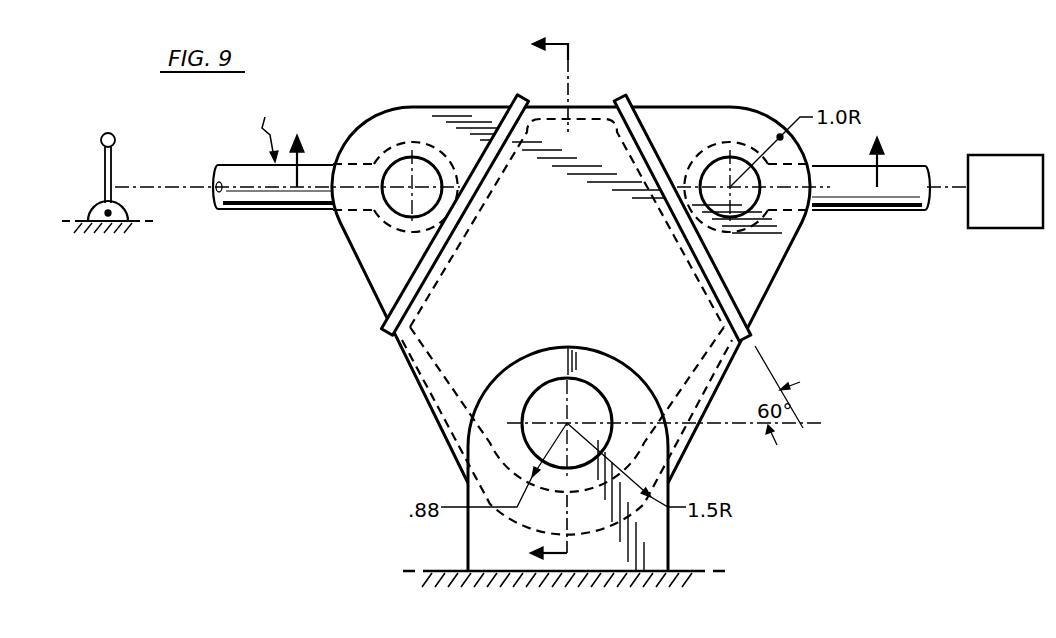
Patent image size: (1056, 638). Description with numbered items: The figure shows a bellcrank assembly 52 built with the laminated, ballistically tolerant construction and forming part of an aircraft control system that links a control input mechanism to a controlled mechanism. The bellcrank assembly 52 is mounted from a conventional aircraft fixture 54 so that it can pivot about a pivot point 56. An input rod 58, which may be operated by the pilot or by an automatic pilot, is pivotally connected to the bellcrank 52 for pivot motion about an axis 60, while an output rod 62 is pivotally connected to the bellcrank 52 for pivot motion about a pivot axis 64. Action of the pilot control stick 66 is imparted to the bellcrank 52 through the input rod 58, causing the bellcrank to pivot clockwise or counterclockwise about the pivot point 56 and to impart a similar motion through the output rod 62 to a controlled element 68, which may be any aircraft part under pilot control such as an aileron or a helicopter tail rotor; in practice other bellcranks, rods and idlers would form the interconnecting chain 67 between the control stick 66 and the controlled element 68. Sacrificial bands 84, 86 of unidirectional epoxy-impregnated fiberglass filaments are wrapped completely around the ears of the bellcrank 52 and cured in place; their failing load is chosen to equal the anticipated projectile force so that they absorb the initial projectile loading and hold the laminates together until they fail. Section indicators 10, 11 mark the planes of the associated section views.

The bellcrank assembly 52 is at (403, 96).
The aircraft fixture 54 is at (660, 532).
The pivot point 56 is at (563, 421).
The input rod 58 is at (239, 172).
The pivot axis of input rod 60 is at (411, 190).
The output rod 62 is at (893, 177).
The pivot axis of output rod 64 is at (731, 186).
The pilot control stick 66 is at (100, 143).
The interconnecting chain 67 is at (265, 126).
The controlled element 68 is at (1026, 208).
The sacrificial band 84 is at (384, 322).
The sacrificial band 86 is at (738, 303).
The section line 10- 10 is at (534, 301).
The section line 11- 11 is at (879, 136).